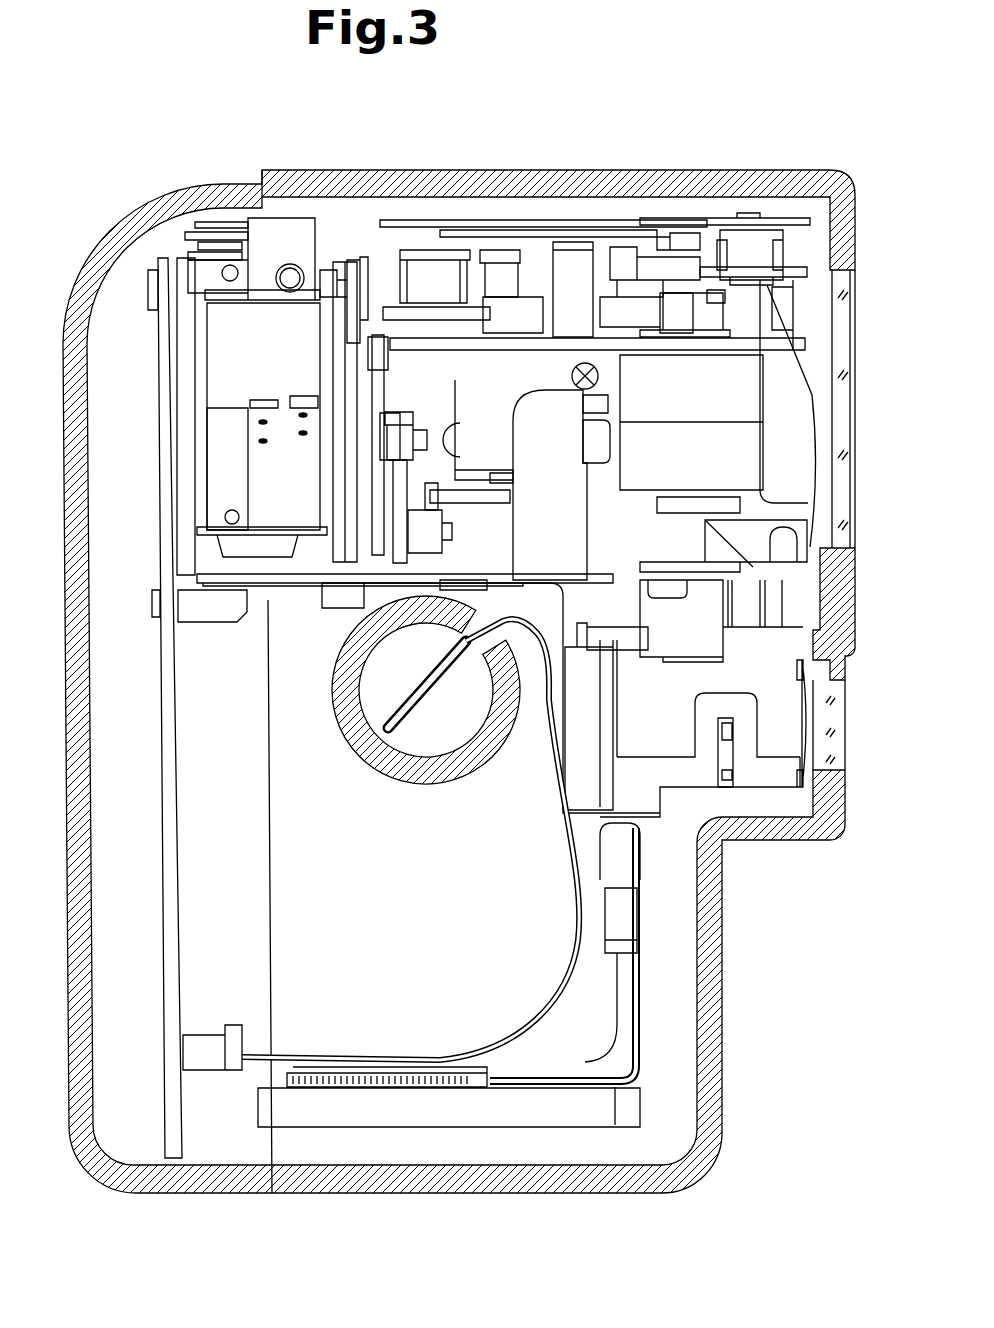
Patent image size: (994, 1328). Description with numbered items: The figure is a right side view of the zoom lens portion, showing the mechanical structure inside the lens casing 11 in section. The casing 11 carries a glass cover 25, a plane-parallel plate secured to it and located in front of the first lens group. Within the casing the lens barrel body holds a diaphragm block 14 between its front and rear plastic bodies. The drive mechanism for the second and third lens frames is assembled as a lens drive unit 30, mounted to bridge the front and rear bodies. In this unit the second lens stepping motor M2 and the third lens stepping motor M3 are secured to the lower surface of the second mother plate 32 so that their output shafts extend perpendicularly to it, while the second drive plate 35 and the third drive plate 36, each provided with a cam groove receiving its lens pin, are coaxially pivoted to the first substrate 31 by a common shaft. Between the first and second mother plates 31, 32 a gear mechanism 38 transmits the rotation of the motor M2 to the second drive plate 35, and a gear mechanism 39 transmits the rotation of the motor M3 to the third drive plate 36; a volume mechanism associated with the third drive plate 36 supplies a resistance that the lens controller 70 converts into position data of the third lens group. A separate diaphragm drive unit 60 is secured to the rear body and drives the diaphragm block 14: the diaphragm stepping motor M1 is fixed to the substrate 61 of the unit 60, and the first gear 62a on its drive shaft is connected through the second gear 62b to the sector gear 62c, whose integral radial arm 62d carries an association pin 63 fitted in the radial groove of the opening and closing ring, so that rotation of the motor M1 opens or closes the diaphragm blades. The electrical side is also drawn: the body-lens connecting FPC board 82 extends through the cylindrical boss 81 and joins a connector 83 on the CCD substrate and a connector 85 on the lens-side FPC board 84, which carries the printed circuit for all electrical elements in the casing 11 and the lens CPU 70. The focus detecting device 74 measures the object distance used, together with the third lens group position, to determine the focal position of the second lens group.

The lens casing 11 is at (712, 1012).
The diaphragm block 14 is at (536, 268).
The glass cover 25 is at (843, 547).
The lens drive unit 30 is at (501, 198).
The first substrate 31 is at (668, 222).
The second mother plate 32 is at (798, 343).
The second drive plate 35 is at (465, 230).
The third drive plate 36 is at (400, 268).
The gear mechanism 38 is at (718, 238).
The gear mechanism 39 is at (318, 200).
The diaphragm drive unit 60 is at (222, 452).
The substrate 61 is at (360, 395).
The first gear 62a is at (407, 467).
The second gear 62b is at (337, 590).
The sector gear 62c is at (345, 600).
The radial arm 62d is at (490, 457).
The association pin 63 is at (360, 590).
The lens controller 70 is at (420, 1075).
The focus detecting device 74 is at (777, 747).
The cylindrical boss 81 is at (450, 786).
The body-lens connecting FPC board 82 is at (547, 1060).
The connector 83 is at (200, 1053).
The FPC board 84 is at (207, 590).
The connector 85 is at (620, 930).
The diaphragm stepping motor M1 is at (240, 383).
The second lens stepping motor M2 is at (745, 407).
The third lens stepping motor M3 is at (452, 500).